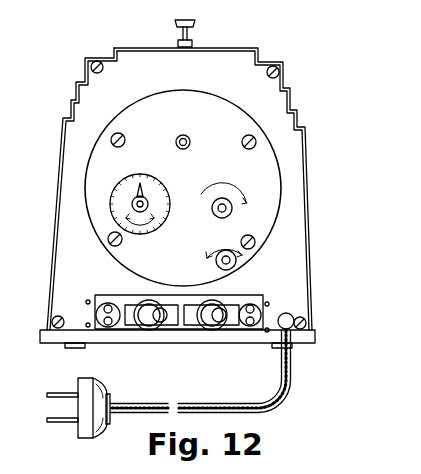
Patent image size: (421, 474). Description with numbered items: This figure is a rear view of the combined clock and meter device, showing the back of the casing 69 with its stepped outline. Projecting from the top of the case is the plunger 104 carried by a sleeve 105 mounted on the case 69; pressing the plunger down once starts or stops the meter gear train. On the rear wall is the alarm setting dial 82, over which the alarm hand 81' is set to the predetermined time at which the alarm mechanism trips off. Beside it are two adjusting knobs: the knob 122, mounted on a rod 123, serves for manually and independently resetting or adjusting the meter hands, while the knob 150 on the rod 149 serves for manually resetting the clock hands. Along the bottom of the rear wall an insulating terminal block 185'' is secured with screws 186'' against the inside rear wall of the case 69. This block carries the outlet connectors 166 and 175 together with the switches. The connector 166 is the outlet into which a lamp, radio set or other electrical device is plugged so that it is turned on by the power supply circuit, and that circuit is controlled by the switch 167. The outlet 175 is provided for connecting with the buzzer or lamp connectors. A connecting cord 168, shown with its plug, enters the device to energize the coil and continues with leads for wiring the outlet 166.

The casing 69 is at (292, 108).
The plunger 104 is at (180, 21).
The sleeve 105 is at (194, 44).
The dial 82 is at (115, 178).
The alarm hand 81' is at (168, 187).
The knob 122 is at (235, 212).
The rod 123 is at (228, 204).
The rod 149 is at (231, 263).
The knob 150 is at (229, 268).
The insulating terminal block 185'' is at (167, 298).
The screws 186'' is at (185, 296).
The connector 166 is at (110, 324).
The switch 167 is at (152, 325).
The outlet 175 is at (250, 327).
The connecting cord 168 is at (282, 386).